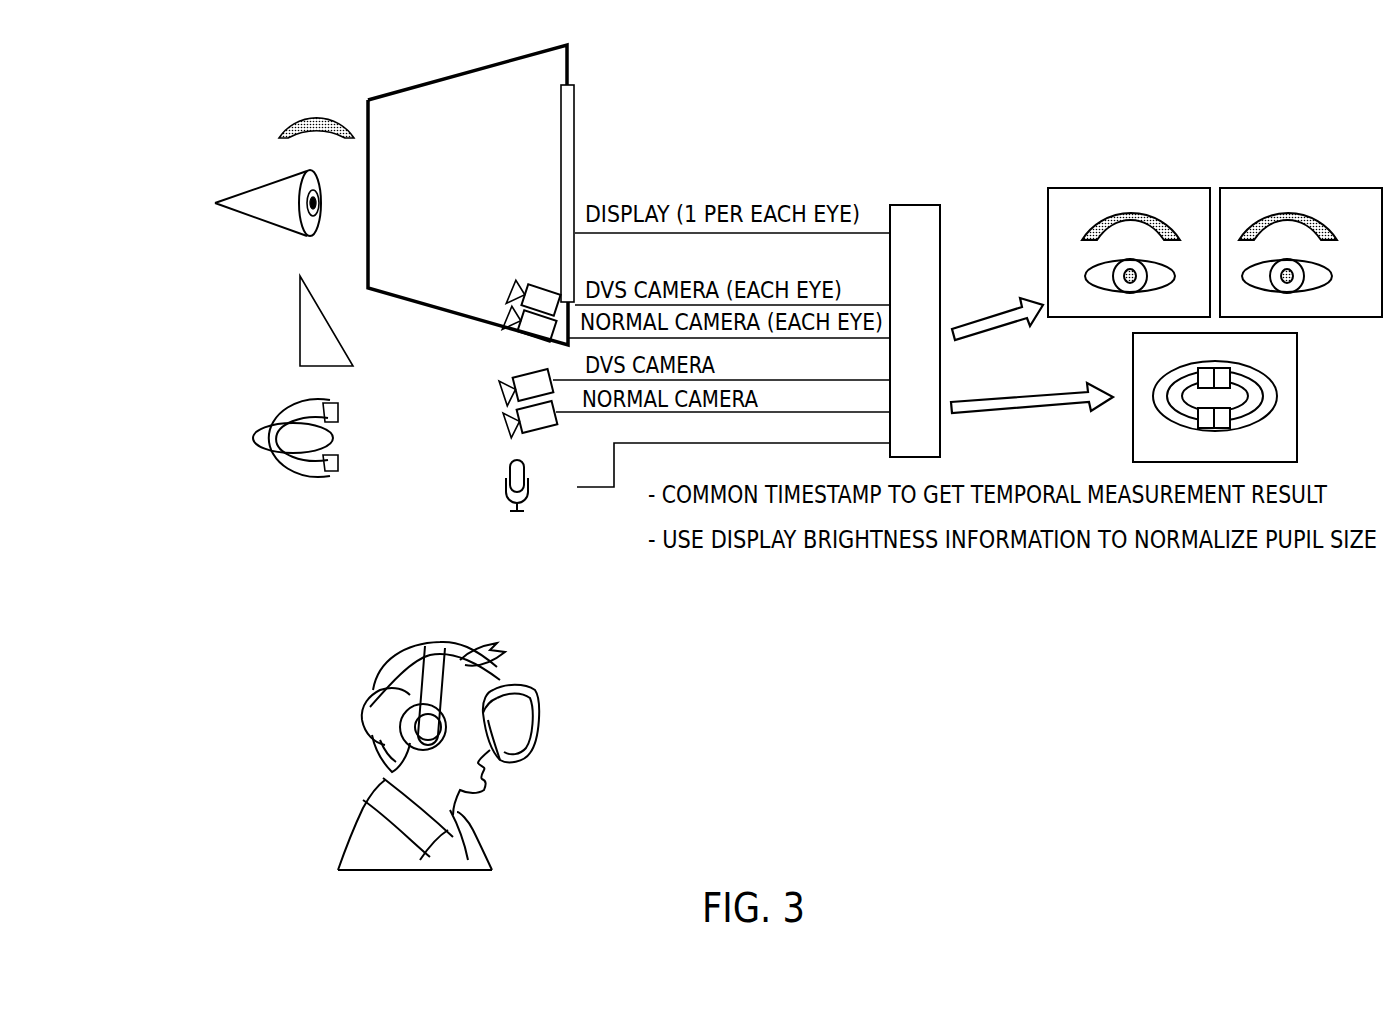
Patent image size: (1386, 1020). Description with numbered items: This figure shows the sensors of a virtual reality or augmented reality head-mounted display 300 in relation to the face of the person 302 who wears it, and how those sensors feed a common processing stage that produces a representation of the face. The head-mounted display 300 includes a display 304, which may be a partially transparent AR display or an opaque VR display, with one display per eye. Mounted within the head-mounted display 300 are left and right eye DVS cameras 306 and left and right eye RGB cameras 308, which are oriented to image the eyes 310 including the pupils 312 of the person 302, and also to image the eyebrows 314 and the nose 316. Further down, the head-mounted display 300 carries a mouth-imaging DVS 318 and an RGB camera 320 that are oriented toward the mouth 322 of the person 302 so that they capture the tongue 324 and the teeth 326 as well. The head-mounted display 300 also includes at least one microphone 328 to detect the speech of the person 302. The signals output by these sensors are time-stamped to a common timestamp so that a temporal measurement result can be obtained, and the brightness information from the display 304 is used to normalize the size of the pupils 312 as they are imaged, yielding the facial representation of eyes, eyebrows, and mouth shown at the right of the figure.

The head-mounted display 300 is at (540, 716).
The person 302 is at (447, 642).
The display 304 is at (526, 55).
The left and right eye DVS cameras 306 is at (530, 284).
The left and right eye RGB cameras 308 is at (515, 335).
The eyes 310 is at (253, 190).
The pupils 312 is at (298, 213).
The eyebrows 314 is at (278, 136).
The nose 316 is at (299, 322).
The mouth-imaging DVS 318 is at (503, 394).
The RGB camera 320 is at (505, 426).
The mouth 322 is at (239, 440).
The tongue 324 is at (276, 450).
The teeth 326 is at (333, 462).
The microphone 328 is at (507, 478).